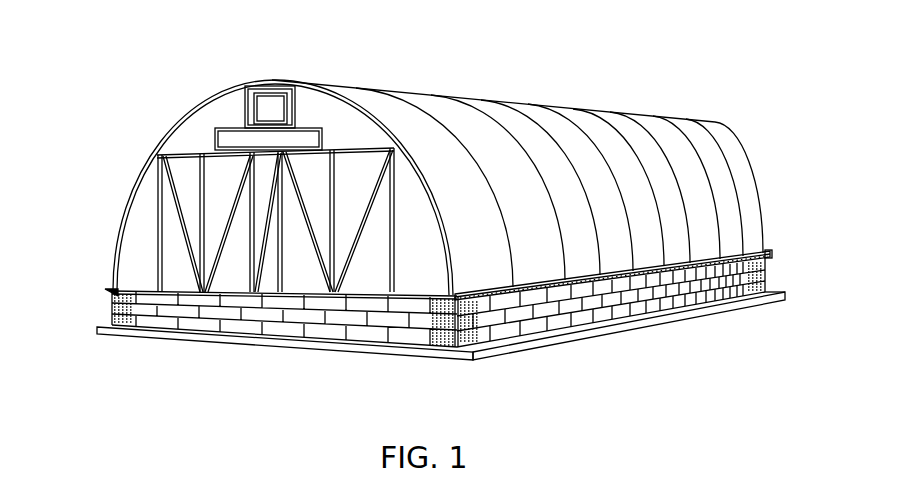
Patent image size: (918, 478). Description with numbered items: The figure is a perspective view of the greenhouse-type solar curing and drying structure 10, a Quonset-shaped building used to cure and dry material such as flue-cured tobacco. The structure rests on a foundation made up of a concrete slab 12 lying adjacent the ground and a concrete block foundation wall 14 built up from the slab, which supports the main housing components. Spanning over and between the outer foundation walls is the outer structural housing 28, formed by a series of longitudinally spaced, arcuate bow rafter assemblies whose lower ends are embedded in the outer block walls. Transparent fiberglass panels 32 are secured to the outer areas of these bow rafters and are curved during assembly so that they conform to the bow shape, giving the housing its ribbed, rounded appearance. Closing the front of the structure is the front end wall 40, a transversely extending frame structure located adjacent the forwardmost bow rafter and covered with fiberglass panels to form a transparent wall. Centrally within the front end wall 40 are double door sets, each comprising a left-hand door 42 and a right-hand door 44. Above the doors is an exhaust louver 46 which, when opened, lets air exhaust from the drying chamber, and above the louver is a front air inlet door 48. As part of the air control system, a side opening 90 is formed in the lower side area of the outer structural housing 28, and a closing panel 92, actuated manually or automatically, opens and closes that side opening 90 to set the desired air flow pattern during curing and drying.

The solar curing and drying structure 10 is at (493, 56).
The concrete slab 12 is at (643, 322).
The concrete block foundation wall 14 is at (780, 270).
The outer structural housing 28 is at (720, 188).
The fiberglass panels 32 is at (445, 103).
The front end wall 40 is at (128, 240).
The left-hand door 42 is at (170, 273).
The right-hand door 44 is at (233, 282).
The exhaust louver 46 is at (233, 138).
The front air inlet door 48 is at (267, 103).
The side opening 90 is at (446, 308).
The closing panel 92 is at (515, 284).